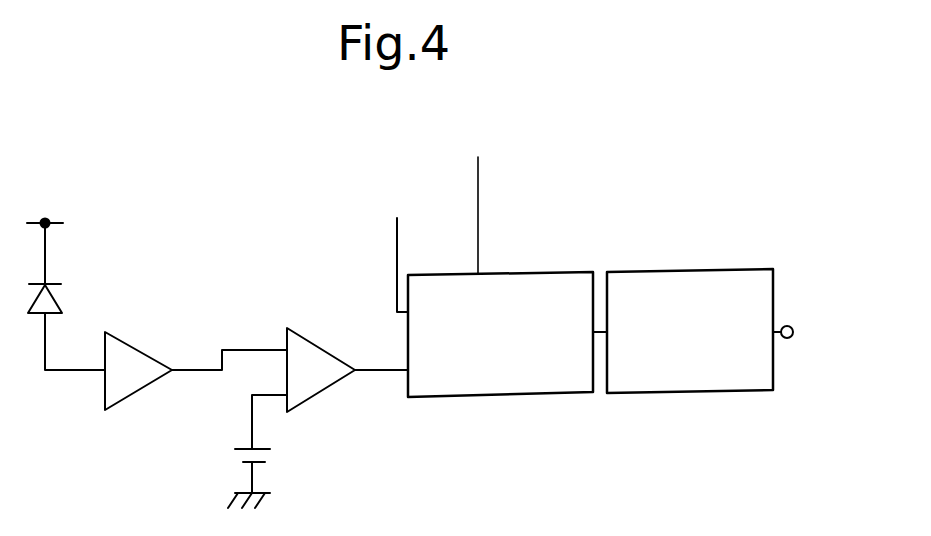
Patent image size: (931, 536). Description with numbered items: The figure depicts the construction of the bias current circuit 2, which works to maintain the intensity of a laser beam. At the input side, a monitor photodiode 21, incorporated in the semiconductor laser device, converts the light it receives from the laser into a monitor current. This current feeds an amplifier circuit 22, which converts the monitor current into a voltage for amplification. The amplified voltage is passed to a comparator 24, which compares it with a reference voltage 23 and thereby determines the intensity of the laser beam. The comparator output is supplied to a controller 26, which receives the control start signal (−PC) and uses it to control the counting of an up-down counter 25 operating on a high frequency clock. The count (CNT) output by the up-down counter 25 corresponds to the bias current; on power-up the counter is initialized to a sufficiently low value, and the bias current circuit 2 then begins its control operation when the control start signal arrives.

The bias current circuit 2 is at (623, 317).
The monitor photodiode 21 is at (48, 300).
The amplifier circuit 22 is at (138, 363).
The reference voltage 23 is at (242, 450).
The comparator 24 is at (306, 350).
The up-down counter 25 is at (640, 272).
The controller 26 is at (468, 393).